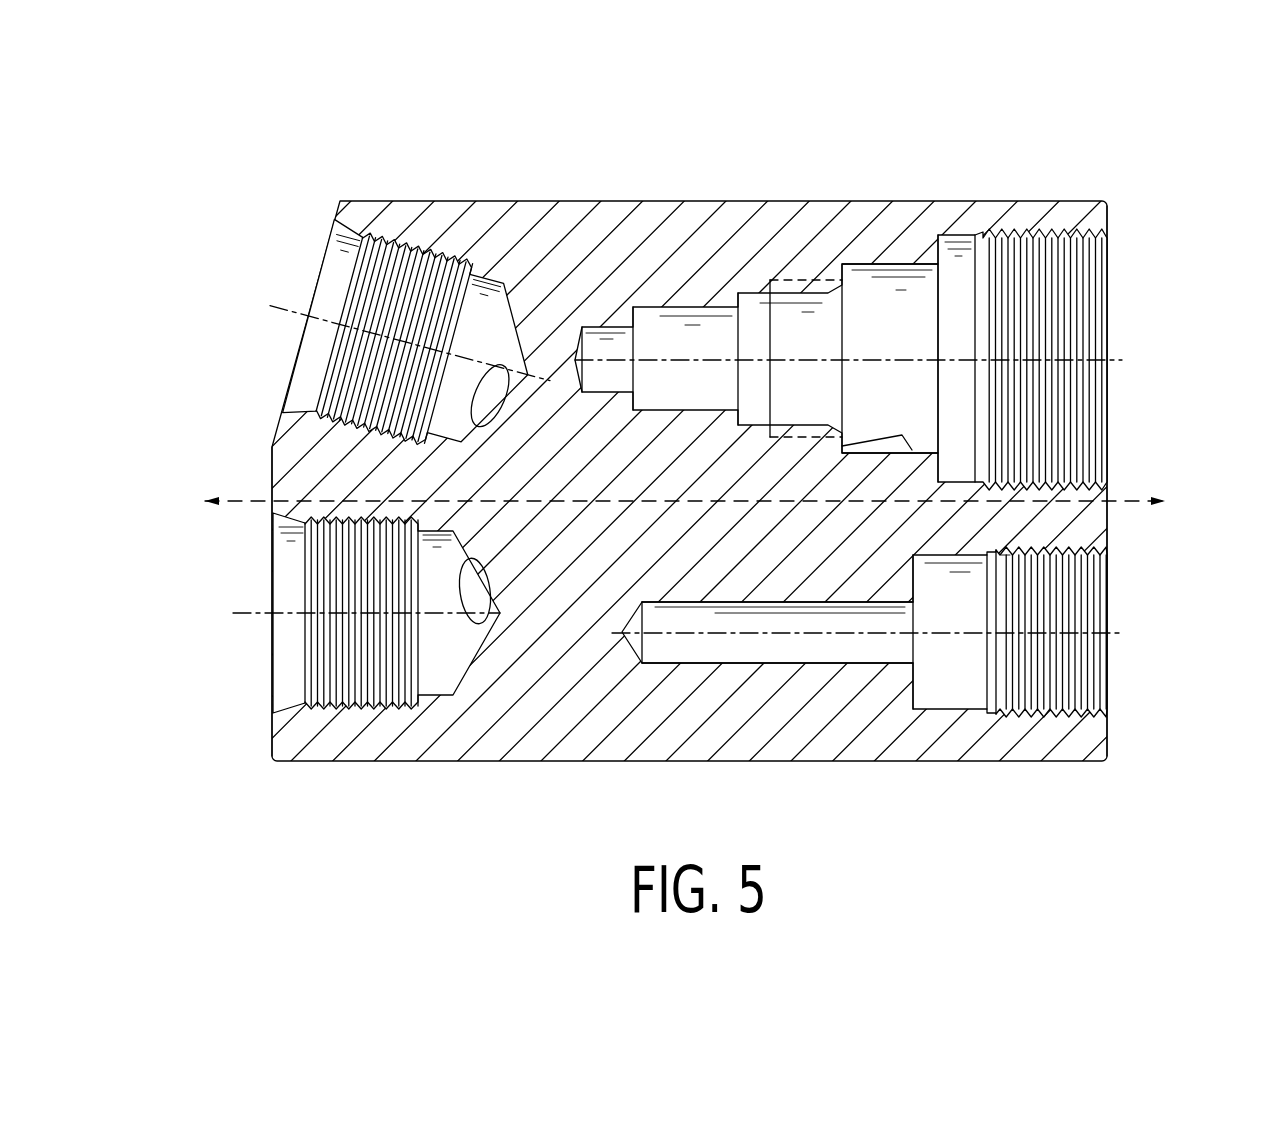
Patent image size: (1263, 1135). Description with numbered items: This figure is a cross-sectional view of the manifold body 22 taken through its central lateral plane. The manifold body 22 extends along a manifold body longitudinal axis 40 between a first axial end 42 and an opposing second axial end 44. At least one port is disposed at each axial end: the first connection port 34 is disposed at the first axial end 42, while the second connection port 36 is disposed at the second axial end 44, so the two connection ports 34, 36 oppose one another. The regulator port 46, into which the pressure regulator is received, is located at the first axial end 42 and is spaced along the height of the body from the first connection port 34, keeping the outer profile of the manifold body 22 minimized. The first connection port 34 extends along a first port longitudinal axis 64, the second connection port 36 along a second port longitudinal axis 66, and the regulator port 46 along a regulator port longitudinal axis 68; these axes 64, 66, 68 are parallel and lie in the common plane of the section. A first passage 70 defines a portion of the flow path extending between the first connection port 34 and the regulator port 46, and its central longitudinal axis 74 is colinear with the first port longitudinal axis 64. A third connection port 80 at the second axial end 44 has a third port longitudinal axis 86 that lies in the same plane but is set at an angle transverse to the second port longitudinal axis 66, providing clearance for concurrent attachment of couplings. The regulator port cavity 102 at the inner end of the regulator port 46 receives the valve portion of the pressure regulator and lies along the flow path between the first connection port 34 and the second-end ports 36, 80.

The manifold body 22 is at (1082, 137).
The first connection port 34 is at (1108, 568).
The second connection port 36 is at (272, 525).
The manifold body longitudinal axis 40 is at (237, 500).
The first axial end 42 is at (1125, 738).
The second axial end 44 is at (240, 738).
The regulator port 46 is at (1108, 440).
The first port longitudinal axis 64 is at (1118, 633).
The second port longitudinal axis 66 is at (250, 617).
The regulator port longitudinal axis 68 is at (1118, 360).
The first passage 70 is at (730, 648).
The central longitudinal axis of the first passage 74 is at (808, 637).
The third connection port 80 is at (323, 255).
The third port longitudinal axis 86 is at (283, 303).
The regulator port cavity 102 is at (884, 302).